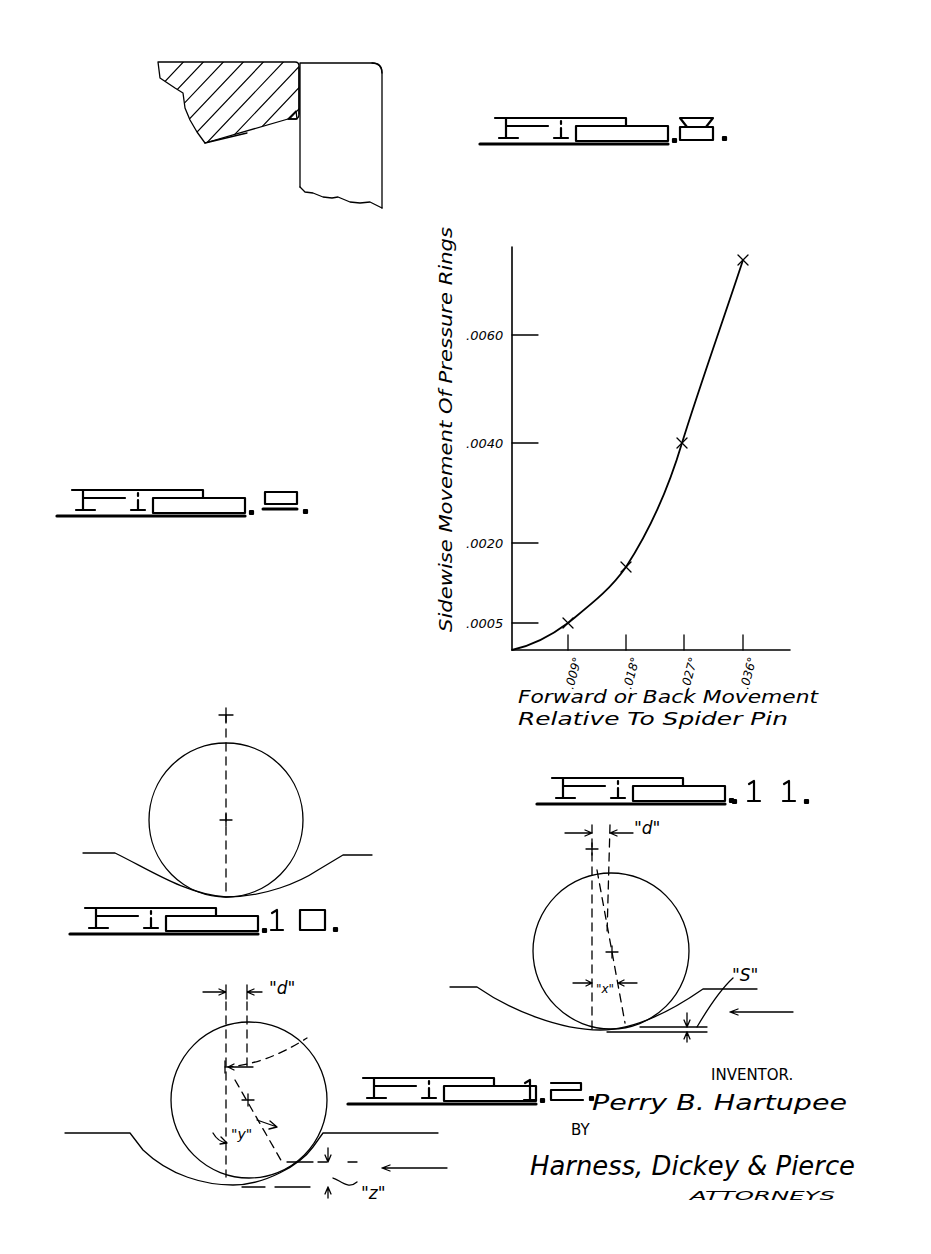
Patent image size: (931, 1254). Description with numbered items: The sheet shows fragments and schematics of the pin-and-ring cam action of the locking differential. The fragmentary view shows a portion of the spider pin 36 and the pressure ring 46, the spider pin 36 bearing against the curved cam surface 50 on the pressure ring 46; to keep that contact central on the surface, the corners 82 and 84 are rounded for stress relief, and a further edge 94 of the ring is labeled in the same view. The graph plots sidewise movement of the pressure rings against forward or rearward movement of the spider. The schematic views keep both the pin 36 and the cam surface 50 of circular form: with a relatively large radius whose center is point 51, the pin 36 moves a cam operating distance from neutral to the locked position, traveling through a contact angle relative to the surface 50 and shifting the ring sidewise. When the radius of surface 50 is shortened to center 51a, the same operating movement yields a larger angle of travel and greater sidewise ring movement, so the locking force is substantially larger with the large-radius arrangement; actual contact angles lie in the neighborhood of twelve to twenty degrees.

In FIG. 8, the spider pin 36 is at (367, 97).
In FIG. 10, the spider pin 36 is at (280, 774).
In FIG. 11, the spider pin 36 is at (653, 905).
In FIG. 12, the spider pin 36 is at (249, 1100).
In FIG. 8, the pressure ring 46 is at (208, 74).
In FIG. 8, the curved cam surface 50 is at (297, 95).
In FIG. 10, the curved cam surface 50 is at (318, 870).
In FIG. 11, the curved cam surface 50 is at (687, 997).
In FIG. 12, the curved cam surface 50 is at (251, 1160).
In FIG. 10, the center of the cam surface 51 is at (228, 715).
In FIG. 11, the center of the cam surface 51 is at (592, 850).
In FIG. 12, the center of the cam surface 51 is at (239, 1089).
In FIG. 12, the shortened-radius center 51a is at (310, 1033).
In FIG. 8, the corner 82 is at (378, 63).
In FIG. 8, the corner 84 is at (293, 63).
In FIG. 8, the ring flange edge 94 is at (247, 137).